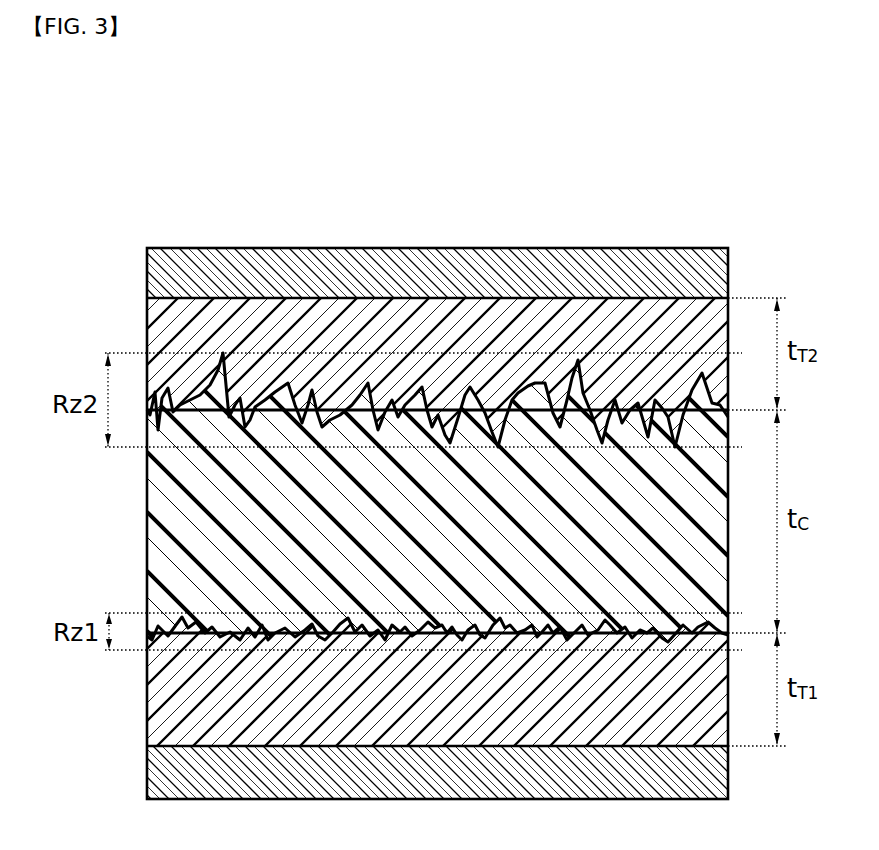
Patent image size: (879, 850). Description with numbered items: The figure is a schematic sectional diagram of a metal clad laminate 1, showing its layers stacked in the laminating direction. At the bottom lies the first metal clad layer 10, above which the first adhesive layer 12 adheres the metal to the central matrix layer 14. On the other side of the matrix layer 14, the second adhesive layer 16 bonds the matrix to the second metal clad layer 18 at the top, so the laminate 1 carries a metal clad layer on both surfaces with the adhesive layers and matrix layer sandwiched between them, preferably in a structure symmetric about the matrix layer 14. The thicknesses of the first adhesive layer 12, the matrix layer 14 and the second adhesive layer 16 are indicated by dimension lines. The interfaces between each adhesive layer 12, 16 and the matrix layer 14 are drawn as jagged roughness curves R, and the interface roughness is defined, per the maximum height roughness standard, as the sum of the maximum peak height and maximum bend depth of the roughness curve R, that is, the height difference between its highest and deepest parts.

The metal clad laminate 1 is at (247, 168).
The first metal clad layer 10 is at (157, 772).
The first adhesive layer 12 is at (160, 698).
The matrix layer 14 is at (186, 530).
The second adhesive layer 16 is at (158, 328).
The second metal clad layer 18 is at (152, 273).
The roughness curve R is at (567, 378).